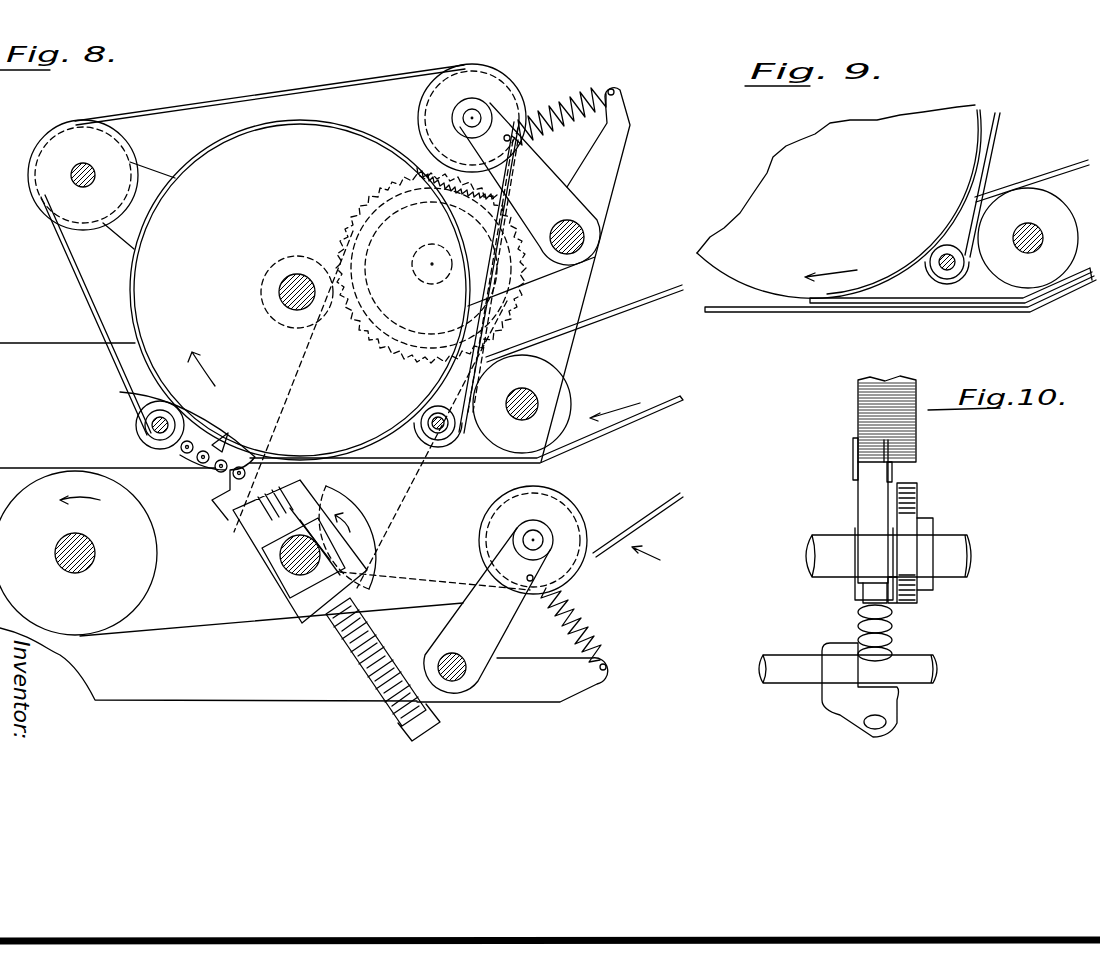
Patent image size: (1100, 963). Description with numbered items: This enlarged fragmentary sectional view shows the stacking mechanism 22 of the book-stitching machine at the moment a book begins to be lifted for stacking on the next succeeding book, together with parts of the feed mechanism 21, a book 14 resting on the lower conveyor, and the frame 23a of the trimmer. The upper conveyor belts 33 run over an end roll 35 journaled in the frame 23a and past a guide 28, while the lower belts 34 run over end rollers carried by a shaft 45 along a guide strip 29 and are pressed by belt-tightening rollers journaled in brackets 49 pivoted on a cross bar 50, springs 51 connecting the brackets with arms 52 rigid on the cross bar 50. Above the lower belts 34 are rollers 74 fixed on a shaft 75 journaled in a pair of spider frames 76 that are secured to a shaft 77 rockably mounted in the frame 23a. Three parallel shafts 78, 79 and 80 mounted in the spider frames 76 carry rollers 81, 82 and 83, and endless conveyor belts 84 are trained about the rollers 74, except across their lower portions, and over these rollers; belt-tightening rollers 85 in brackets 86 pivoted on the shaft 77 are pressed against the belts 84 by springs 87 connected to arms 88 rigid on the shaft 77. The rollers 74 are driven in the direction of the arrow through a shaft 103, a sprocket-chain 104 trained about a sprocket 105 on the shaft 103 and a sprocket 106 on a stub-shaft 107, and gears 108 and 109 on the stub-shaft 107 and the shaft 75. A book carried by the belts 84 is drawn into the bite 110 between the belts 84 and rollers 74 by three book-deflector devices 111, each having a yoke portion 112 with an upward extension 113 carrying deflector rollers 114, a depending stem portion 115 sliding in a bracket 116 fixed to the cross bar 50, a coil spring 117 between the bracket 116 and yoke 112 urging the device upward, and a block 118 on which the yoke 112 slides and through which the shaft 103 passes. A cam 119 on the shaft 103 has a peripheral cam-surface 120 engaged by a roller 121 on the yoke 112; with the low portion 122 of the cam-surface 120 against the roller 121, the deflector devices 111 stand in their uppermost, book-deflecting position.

In FIG. 8, the sheet/web 14 is at (25, 488).
In FIG. 8, the feed mechanism 21 is at (657, 565).
In FIG. 8, the stacking mechanism 22 is at (228, 90).
In FIG. 8, the frame 23a is at (190, 695).
In FIG. 8, the pulley 28 is at (570, 512).
In FIG. 8, the guide strip 29 is at (616, 430).
In FIG. 9, the guide strip 29 is at (905, 302).
In FIG. 8, the belts 33 is at (612, 315).
In FIG. 9, the belts 33 is at (1067, 163).
In FIG. 8, the belts 34 is at (664, 510).
In FIG. 9, the belts 34 is at (1003, 303).
In FIG. 8, the end roll 35 is at (565, 393).
In FIG. 9, the end roll 35 is at (1047, 200).
In FIG. 8, the shaft 45 is at (72, 576).
In FIG. 8, the brackets 49 is at (512, 624).
In FIG. 8, the cross bar 50 is at (466, 690).
In FIG. 10, the cross bar 50 is at (785, 673).
In FIG. 8, the springs 51 is at (592, 642).
In FIG. 8, the arms 52 is at (565, 695).
In FIG. 8, the rollers 74 is at (330, 132).
In FIG. 9, the rollers 74 is at (787, 162).
In FIG. 10, the rollers 74 is at (917, 428).
In FIG. 8, the shaft 75 is at (295, 276).
In FIG. 8, the spider frames 76 is at (150, 175).
In FIG. 8, the shaft 77 is at (585, 235).
In FIG. 8, the shaft 78 is at (156, 432).
In FIG. 8, the shaft 79 is at (74, 168).
In FIG. 8, the shaft 80 is at (440, 432).
In FIG. 9, the shaft 80 is at (940, 260).
In FIG. 8, the rollers 81 is at (150, 420).
In FIG. 8, the rollers 82 is at (92, 138).
In FIG. 8, the rollers 83 is at (450, 436).
In FIG. 9, the rollers 83 is at (957, 250).
In FIG. 8, the endless conveyor belts 84 is at (82, 292).
In FIG. 9, the endless conveyor belts 84 is at (995, 135).
In FIG. 8, the belt-tightening rollers 85 is at (503, 78).
In FIG. 8, the brackets 86 is at (538, 178).
In FIG. 8, the springs 87 is at (558, 100).
In FIG. 8, the arms 88 is at (626, 148).
In FIG. 8, the shaft 103 is at (275, 590).
In FIG. 10, the shaft 103 is at (817, 550).
In FIG. 8, the sprocket-chain 104 is at (295, 406).
In FIG. 8, the sprocket 105 is at (395, 532).
In FIG. 8, the sprocket 106 is at (400, 330).
In FIG. 8, the stub-shaft 107 is at (434, 282).
In FIG. 8, the gear 108 is at (418, 168).
In FIG. 8, the gear 109 is at (272, 320).
In FIG. 8, the bite 110 is at (200, 414).
In FIG. 8, the book-deflector devices 111 is at (214, 524).
In FIG. 10, the book-deflector devices 111 is at (845, 517).
In FIG. 8, the yoke portion 112 is at (260, 535).
In FIG. 10, the yoke portion 112 is at (868, 495).
In FIG. 8, the upward extension 113 is at (212, 478).
In FIG. 10, the upward extension 113 is at (868, 470).
In FIG. 8, the rollers 114 is at (226, 440).
In FIG. 10, the rollers 114 is at (855, 465).
In FIG. 8, the stem portion 115 is at (372, 700).
In FIG. 10, the stem portion 115 is at (880, 607).
In FIG. 8, the bracket 116 is at (424, 722).
In FIG. 10, the bracket 116 is at (833, 710).
In FIG. 8, the coil spring 117 is at (376, 640).
In FIG. 10, the coil spring 117 is at (868, 610).
In FIG. 8, the block 118 is at (250, 575).
In FIG. 8, the cam 119 is at (250, 594).
In FIG. 10, the cam 119 is at (914, 500).
In FIG. 8, the cam-surface 120 is at (290, 612).
In FIG. 8, the roller 121 is at (384, 590).
In FIG. 10, the roller 121 is at (920, 602).
In FIG. 8, the low portion 122 is at (318, 640).